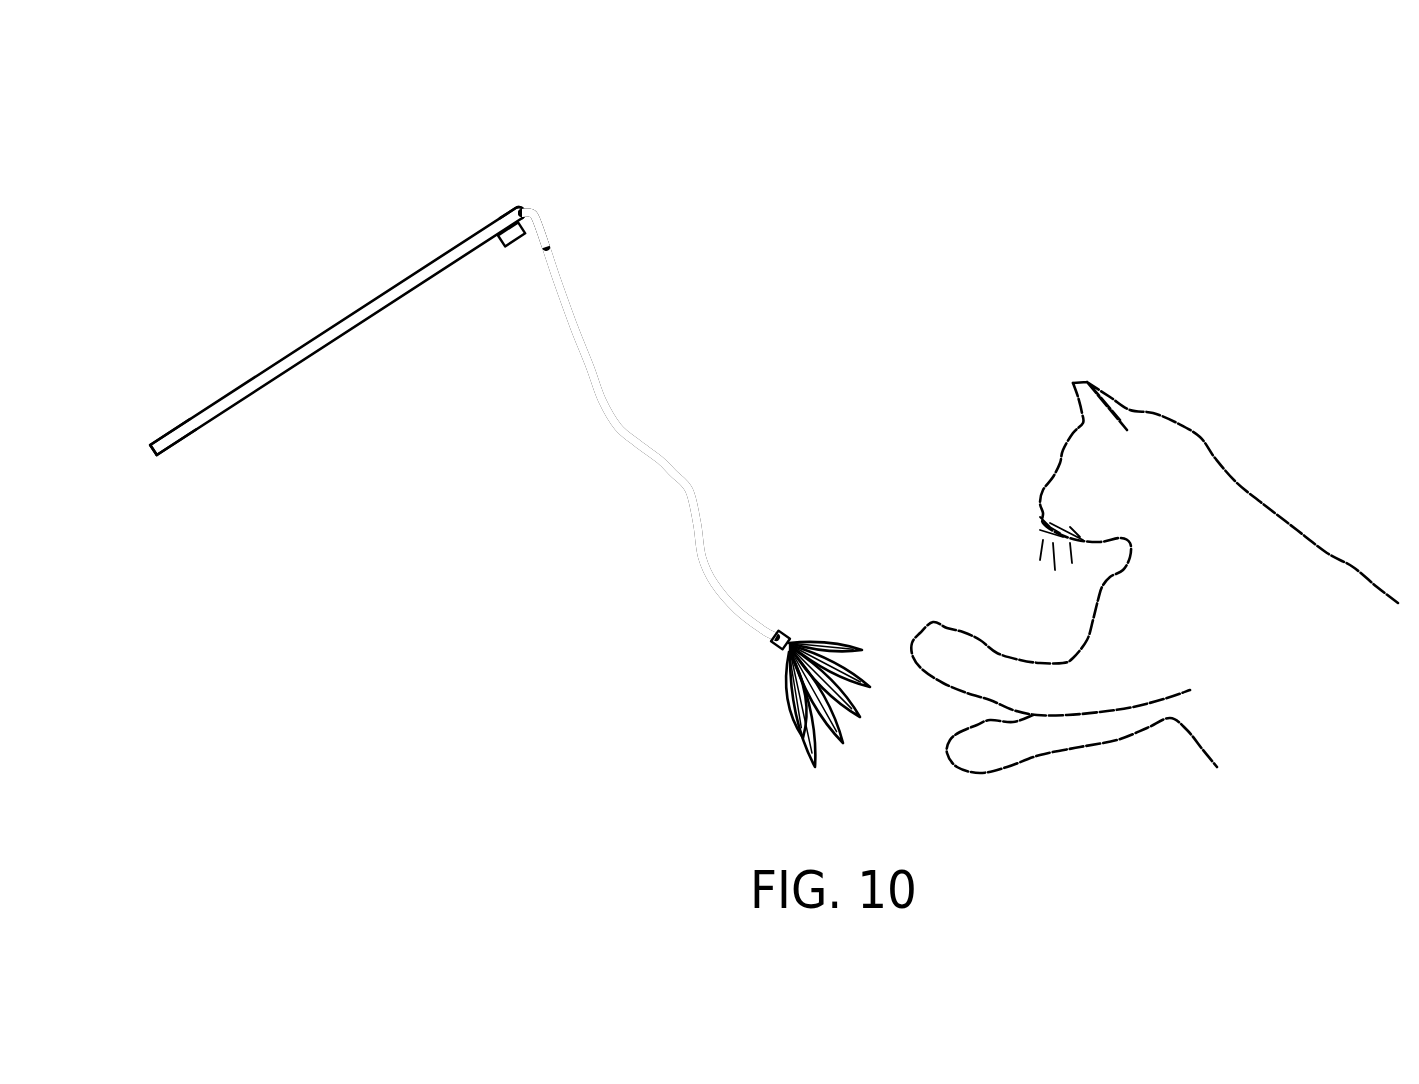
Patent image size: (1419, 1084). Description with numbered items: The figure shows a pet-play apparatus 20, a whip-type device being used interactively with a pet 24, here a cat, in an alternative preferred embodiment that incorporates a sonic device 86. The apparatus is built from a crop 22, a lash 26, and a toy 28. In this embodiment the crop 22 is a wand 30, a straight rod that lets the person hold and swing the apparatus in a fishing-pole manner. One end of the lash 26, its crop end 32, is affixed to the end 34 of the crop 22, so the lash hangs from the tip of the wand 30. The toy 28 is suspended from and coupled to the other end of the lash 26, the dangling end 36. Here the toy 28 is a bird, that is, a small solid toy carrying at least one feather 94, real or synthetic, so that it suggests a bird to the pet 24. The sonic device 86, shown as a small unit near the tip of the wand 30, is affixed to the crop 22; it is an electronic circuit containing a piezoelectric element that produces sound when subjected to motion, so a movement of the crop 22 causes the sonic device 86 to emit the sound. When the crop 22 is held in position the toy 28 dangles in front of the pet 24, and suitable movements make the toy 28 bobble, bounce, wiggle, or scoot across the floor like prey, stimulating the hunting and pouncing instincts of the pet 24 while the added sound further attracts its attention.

The pet-play apparatus 20 is at (940, 423).
The crop 22 is at (205, 423).
The pet 24 is at (1262, 512).
The lash 26 is at (653, 447).
The toy 28 is at (770, 725).
The wand 30 is at (343, 335).
The crop end 32 is at (540, 206).
The end of crop 34 is at (507, 204).
The dangling end 36 is at (782, 622).
The sonic device 86 is at (508, 247).
The feather 94 is at (840, 733).